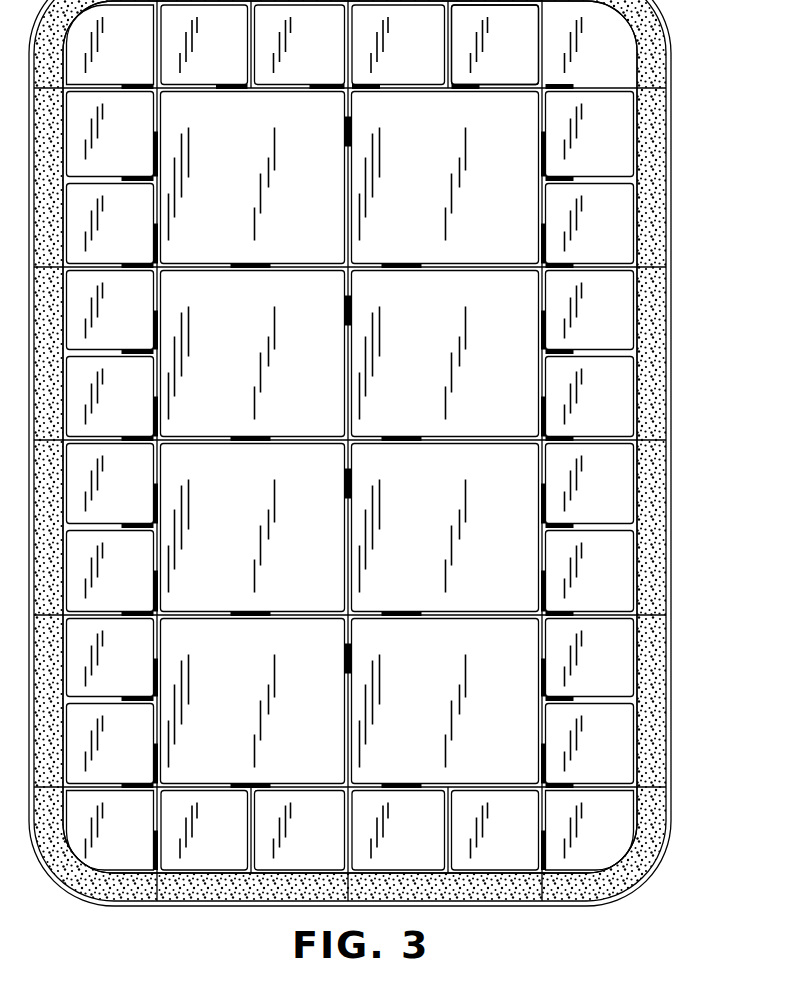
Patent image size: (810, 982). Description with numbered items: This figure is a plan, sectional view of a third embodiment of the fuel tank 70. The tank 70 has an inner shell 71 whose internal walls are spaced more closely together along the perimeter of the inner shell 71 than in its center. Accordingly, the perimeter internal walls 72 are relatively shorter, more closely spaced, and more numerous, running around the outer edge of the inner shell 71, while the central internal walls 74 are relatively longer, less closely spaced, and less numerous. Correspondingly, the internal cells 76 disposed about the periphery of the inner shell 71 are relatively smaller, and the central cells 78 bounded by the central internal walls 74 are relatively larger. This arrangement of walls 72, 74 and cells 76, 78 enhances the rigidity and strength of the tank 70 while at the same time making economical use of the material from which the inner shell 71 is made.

The tank 70 is at (679, 274).
The inner shell 71 is at (67, 406).
The perimeter internal walls 72 is at (93, 82).
The central internal walls 74 is at (233, 262).
The internal cells 76 is at (419, 61).
The central cells 78 is at (236, 374).